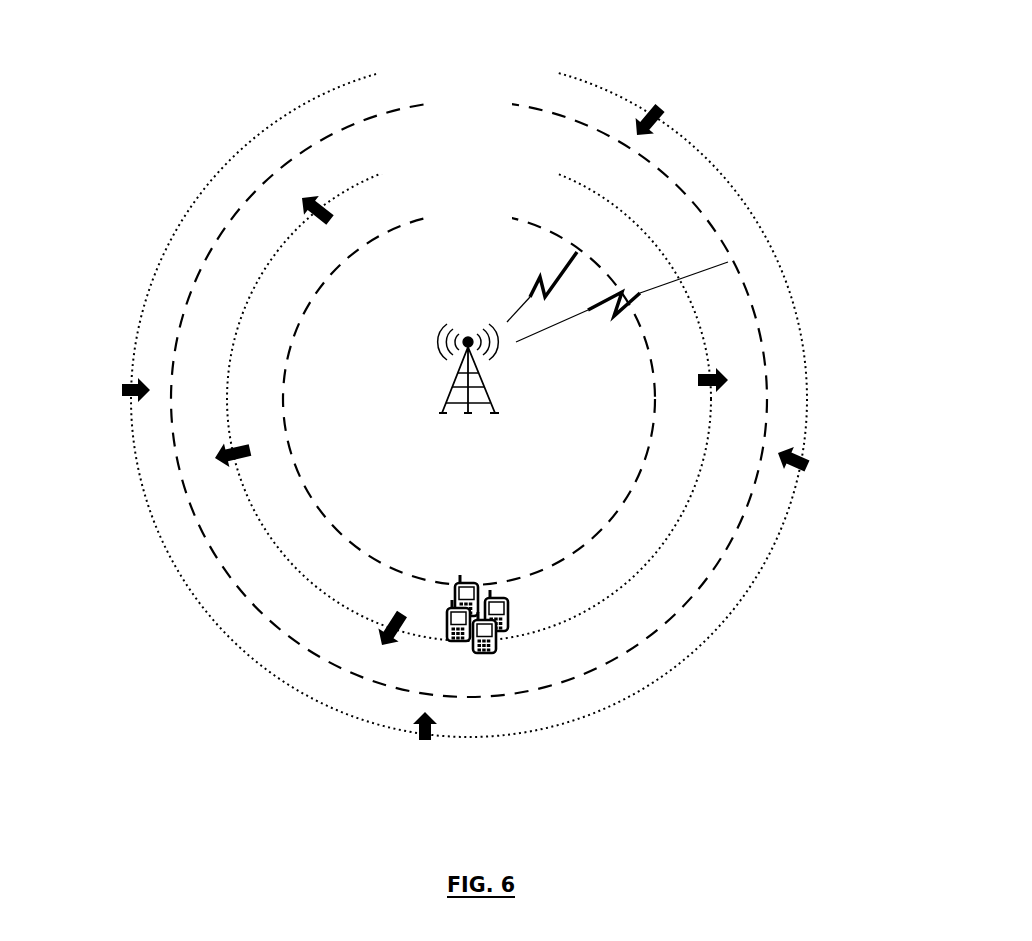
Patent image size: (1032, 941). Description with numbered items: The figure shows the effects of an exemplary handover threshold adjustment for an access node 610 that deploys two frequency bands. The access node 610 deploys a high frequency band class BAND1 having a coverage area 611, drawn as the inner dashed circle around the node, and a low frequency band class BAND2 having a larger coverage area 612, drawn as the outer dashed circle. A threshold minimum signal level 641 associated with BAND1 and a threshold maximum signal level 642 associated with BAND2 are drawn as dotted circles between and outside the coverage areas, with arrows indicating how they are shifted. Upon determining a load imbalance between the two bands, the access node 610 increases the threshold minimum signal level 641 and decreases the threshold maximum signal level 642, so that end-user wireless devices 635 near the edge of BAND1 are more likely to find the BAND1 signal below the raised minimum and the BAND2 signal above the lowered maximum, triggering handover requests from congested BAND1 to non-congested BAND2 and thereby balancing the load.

The access node 610 is at (455, 396).
The coverage area 611 is at (333, 269).
The coverage area 612 is at (718, 230).
The end-user wireless devices 635 is at (450, 568).
The threshold minimum signal level 641 is at (355, 182).
The threshold maximum signal level 642 is at (592, 83).